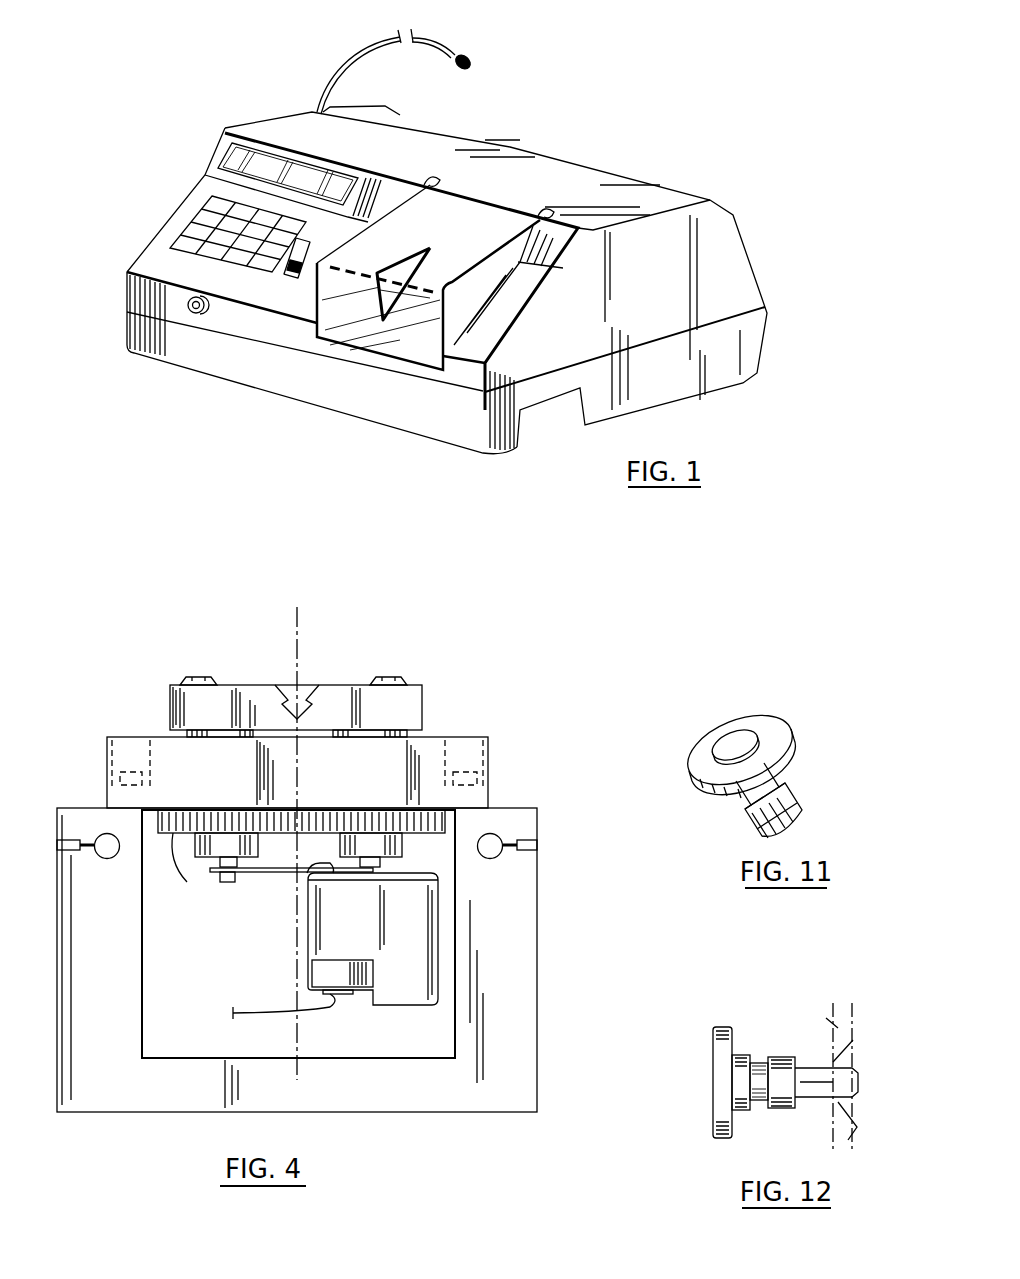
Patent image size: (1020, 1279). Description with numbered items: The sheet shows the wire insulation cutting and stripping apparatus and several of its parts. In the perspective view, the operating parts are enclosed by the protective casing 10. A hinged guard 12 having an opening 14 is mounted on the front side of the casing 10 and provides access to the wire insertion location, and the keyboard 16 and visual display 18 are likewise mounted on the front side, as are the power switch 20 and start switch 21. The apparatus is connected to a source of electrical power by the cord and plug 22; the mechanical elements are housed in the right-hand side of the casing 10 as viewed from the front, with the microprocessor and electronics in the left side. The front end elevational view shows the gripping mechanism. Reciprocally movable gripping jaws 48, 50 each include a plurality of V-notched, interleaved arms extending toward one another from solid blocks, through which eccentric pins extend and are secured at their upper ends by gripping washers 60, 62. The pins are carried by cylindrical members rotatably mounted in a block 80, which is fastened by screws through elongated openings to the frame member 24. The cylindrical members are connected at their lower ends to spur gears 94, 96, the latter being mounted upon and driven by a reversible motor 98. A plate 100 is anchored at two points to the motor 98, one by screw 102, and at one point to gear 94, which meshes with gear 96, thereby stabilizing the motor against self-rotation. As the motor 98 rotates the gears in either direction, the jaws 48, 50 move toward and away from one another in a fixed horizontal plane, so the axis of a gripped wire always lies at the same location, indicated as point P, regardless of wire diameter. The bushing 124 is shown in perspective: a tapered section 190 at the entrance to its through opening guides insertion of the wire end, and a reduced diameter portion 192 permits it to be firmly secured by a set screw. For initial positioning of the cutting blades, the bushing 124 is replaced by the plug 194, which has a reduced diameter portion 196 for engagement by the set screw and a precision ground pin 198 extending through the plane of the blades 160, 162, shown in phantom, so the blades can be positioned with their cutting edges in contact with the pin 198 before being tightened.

In FIG. 1, the protective casing 10 is at (727, 285).
In FIG. 1, the hinged guard 12 is at (453, 205).
In FIG. 1, the opening 14 is at (393, 268).
In FIG. 1, the keyboard 16 is at (195, 233).
In FIG. 1, the visual display 18 is at (228, 155).
In FIG. 1, the power switch 20 is at (290, 272).
In FIG. 1, the start switch 21 is at (196, 315).
In FIG. 1, the cord and plug 22 is at (430, 44).
In FIG. 4, the frame member 24 is at (530, 963).
In FIG. 4, the gripping jaw 48 is at (173, 715).
In FIG. 4, the gripping jaw 50 is at (410, 703).
In FIG. 4, the gripping washer 60 is at (213, 682).
In FIG. 4, the gripping washer 62 is at (393, 680).
In FIG. 4, the point P is at (298, 693).
In FIG. 4, the block 80 is at (427, 748).
In FIG. 4, the spur gear 94 is at (187, 882).
In FIG. 4, the spur gear 96 is at (418, 833).
In FIG. 4, the reversible motor 98 is at (327, 945).
In FIG. 4, the plate 100 is at (300, 868).
In FIG. 4, the screw 102 is at (298, 872).
In FIG. 11, the bushing 124 is at (763, 752).
In FIG. 11, the tapered section 190 is at (742, 733).
In FIG. 11, the reduced diameter portion 192 is at (740, 807).
In FIG. 12, the blade 160 is at (815, 1013).
In FIG. 12, the blade 162 is at (857, 1127).
In FIG. 12, the plug 194 is at (713, 1111).
In FIG. 12, the reduced diameter portion 196 is at (758, 1100).
In FIG. 12, the precision ground pin 198 is at (825, 1083).